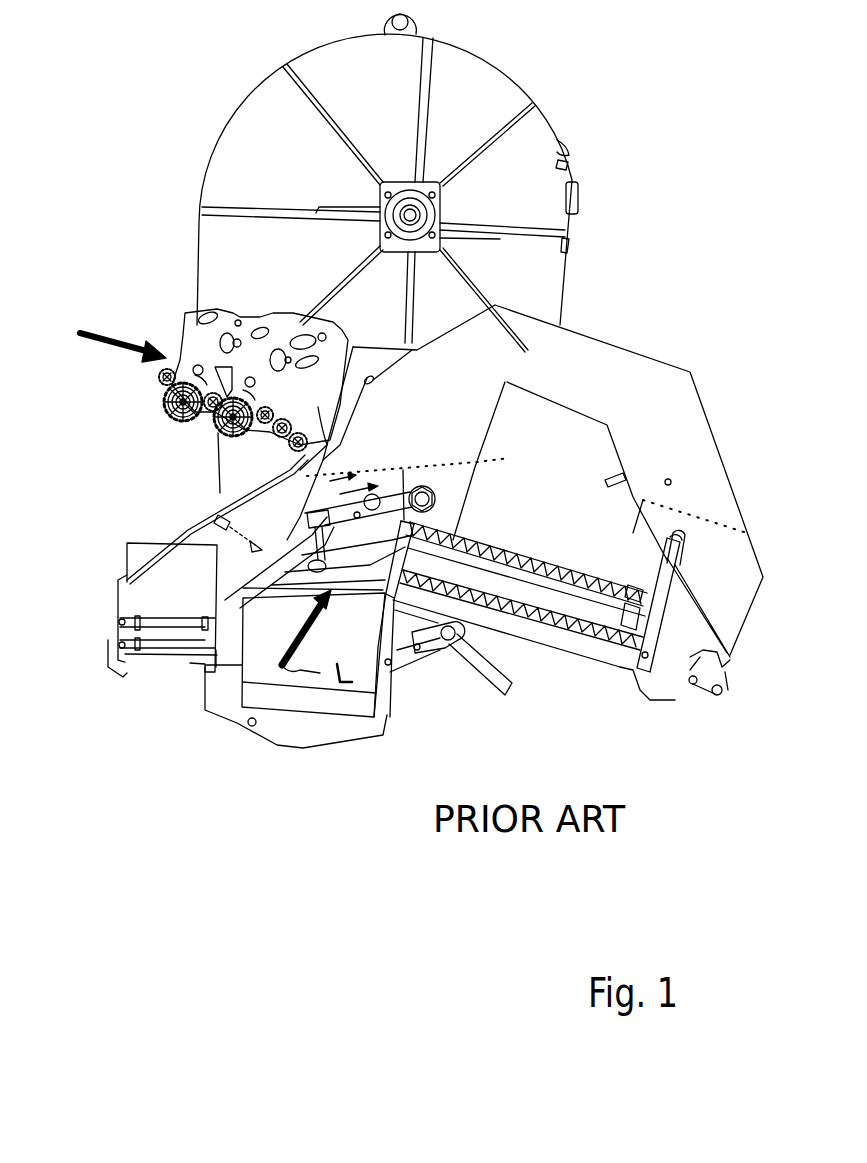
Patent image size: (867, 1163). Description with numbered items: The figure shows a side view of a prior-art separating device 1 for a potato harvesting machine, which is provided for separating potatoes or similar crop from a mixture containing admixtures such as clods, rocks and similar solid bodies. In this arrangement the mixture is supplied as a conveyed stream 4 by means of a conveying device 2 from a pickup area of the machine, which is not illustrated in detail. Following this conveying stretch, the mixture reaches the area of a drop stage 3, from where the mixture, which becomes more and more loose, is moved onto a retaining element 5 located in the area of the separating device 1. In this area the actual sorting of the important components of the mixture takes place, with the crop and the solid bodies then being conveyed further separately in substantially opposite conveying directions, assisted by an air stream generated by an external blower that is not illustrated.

The separating device 1 is at (662, 252).
The conveying device 2 is at (177, 435).
The drop stage 3 is at (343, 453).
The conveyed stream 4 is at (108, 338).
The retaining element 5 is at (400, 540).